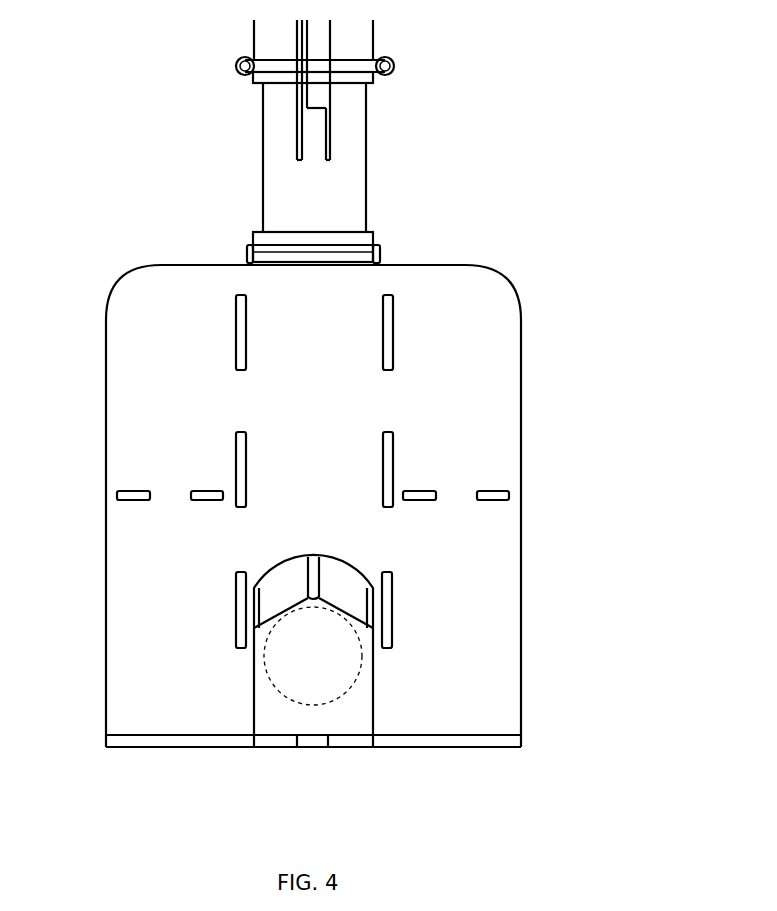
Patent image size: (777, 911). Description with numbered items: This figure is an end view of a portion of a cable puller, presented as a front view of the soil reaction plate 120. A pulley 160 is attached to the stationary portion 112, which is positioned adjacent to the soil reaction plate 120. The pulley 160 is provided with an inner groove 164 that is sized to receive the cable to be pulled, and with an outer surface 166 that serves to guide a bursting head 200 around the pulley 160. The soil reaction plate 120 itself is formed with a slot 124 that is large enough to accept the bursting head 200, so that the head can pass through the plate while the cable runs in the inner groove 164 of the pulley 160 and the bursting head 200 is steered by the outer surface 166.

The stationary portion 112 is at (348, 177).
The soil reaction plate 120 is at (478, 335).
The slot 124 is at (345, 720).
The pulley 160 is at (357, 588).
The inner groove 164 is at (308, 575).
The outer surface 166 is at (273, 597).
The bursting head 200 is at (285, 665).